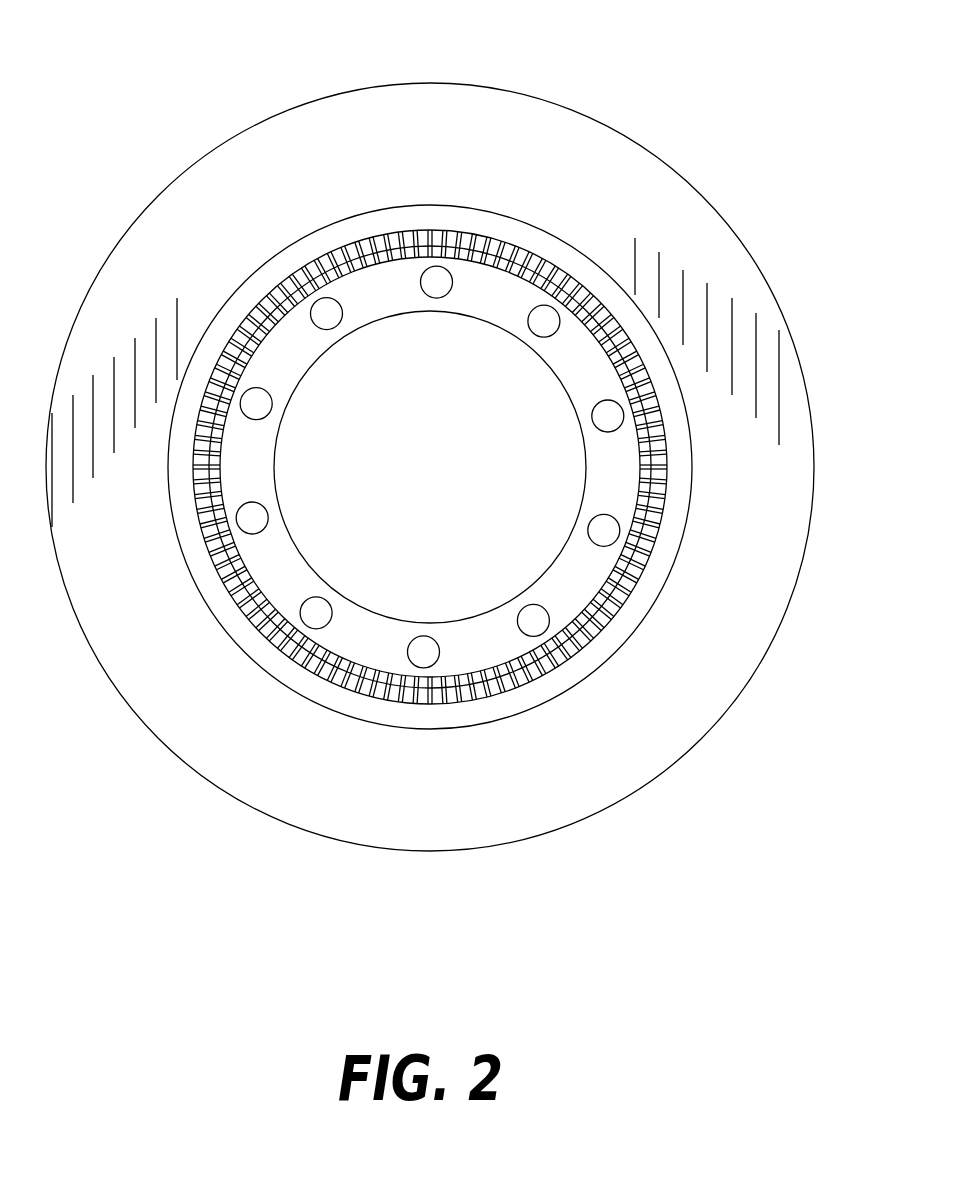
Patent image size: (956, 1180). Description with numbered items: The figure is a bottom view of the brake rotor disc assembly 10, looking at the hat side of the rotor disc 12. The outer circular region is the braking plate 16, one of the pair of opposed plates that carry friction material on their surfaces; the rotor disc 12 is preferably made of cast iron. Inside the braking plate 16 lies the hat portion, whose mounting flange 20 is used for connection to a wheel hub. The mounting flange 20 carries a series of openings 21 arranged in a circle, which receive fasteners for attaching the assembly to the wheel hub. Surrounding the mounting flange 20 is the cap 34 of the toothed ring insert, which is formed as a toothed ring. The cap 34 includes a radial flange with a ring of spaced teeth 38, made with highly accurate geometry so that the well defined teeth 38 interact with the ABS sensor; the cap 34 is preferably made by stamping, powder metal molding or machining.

The brake rotor disc assembly 10 is at (430, 427).
The rotor disc 12 is at (553, 103).
The braking plate 16 is at (435, 138).
The mounting flange 20 is at (313, 356).
The openings 21 is at (420, 297).
The cap 34 is at (612, 370).
The teeth 38 is at (600, 308).